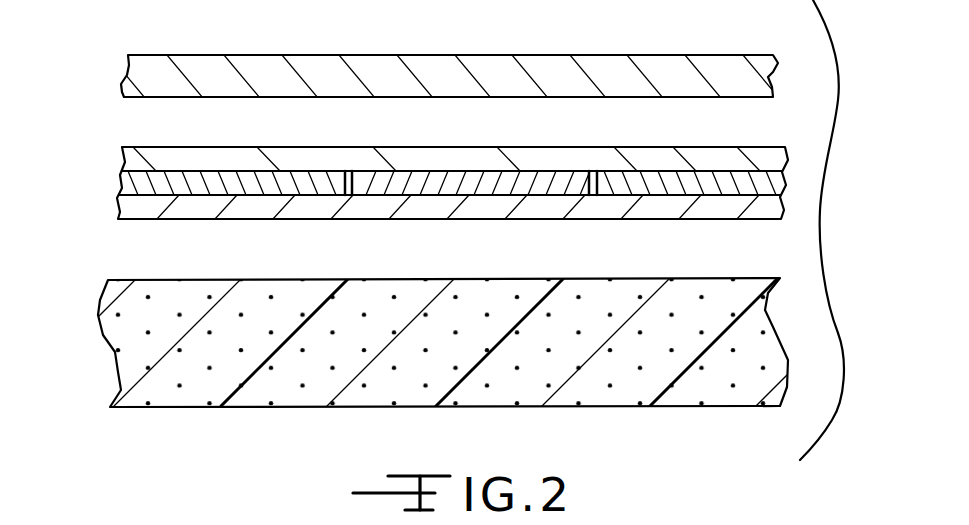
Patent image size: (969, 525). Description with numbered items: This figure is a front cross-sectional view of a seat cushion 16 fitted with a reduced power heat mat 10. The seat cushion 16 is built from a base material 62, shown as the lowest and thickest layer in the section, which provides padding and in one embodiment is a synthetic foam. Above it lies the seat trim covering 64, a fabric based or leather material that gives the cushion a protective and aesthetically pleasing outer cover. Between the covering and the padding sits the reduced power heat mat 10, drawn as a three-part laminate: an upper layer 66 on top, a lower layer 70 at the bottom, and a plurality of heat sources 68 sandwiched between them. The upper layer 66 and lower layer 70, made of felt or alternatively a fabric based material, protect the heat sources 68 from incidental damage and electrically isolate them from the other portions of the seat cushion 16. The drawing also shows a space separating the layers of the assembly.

The reduced power heat mat 10 is at (425, 183).
The seat cushion 16 is at (820, 208).
The base material 62 is at (112, 378).
The seat trim covering 64 is at (127, 75).
The upper layer 66 is at (146, 147).
The heat sources 68 is at (207, 183).
The lower layer 70 is at (118, 210).